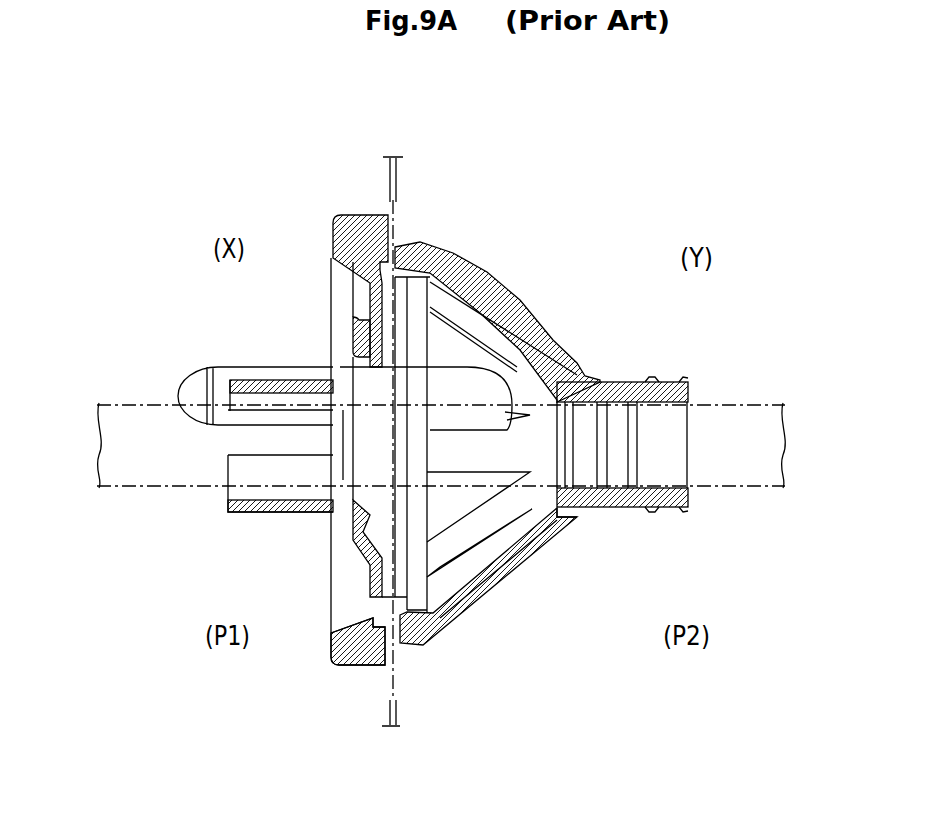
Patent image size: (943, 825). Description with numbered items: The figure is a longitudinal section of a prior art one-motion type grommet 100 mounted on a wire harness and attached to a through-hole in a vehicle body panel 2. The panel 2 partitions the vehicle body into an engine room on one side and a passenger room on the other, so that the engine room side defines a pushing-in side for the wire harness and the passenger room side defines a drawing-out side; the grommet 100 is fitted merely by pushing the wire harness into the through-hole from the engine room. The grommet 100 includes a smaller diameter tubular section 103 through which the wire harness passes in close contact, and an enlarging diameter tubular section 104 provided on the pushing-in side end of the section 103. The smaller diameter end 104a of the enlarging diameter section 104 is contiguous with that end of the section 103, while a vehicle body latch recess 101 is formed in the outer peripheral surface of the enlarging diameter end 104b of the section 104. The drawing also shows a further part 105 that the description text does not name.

The vehicle body panel 2 is at (398, 177).
The one-motion type grommet 100 is at (662, 163).
The vehicle body latch recess 101 is at (350, 667).
The smaller diameter tubular section 103 is at (667, 383).
The enlarging diameter tubular section 104 is at (528, 304).
The smaller diameter end 104a is at (574, 363).
The enlarging diameter end 104b is at (400, 645).
The boot holder cover 105 is at (498, 272).